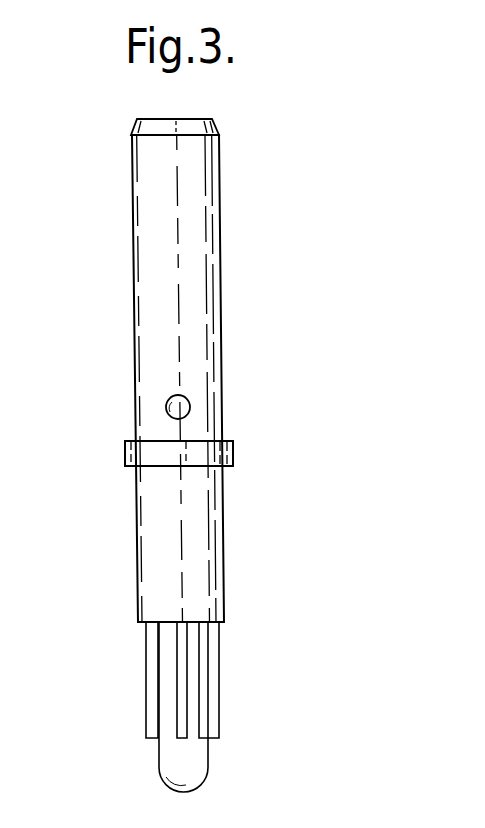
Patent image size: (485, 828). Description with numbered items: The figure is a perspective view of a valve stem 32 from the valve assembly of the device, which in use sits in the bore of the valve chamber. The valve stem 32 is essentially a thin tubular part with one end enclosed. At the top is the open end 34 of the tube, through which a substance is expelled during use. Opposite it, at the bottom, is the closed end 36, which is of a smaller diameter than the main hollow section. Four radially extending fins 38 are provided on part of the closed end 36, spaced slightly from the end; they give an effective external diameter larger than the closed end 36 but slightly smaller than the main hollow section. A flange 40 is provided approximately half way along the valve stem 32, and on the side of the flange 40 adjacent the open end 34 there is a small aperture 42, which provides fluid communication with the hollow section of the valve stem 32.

The valve stem 32 is at (239, 435).
The open end 34 is at (192, 118).
The closed end 36 is at (208, 761).
The radially extending fins 38 is at (203, 707).
The flange 40 is at (233, 449).
The aperture 42 is at (166, 407).